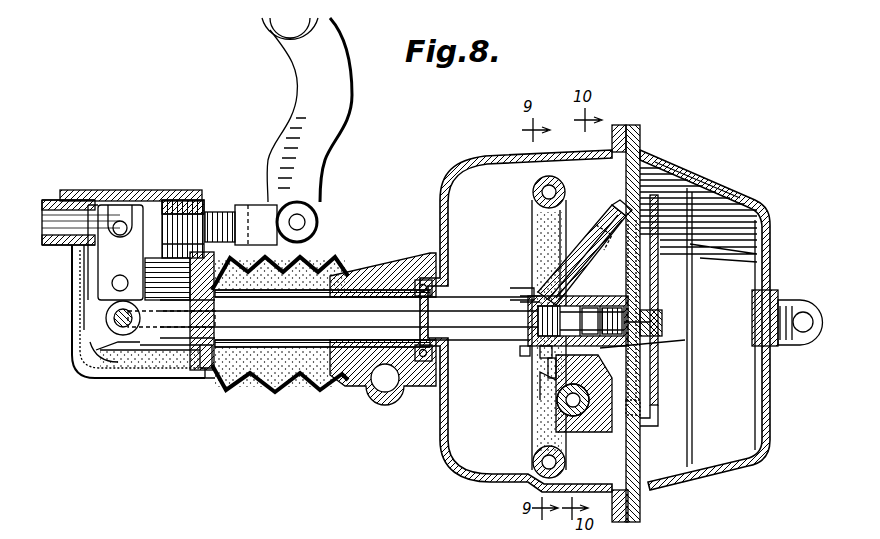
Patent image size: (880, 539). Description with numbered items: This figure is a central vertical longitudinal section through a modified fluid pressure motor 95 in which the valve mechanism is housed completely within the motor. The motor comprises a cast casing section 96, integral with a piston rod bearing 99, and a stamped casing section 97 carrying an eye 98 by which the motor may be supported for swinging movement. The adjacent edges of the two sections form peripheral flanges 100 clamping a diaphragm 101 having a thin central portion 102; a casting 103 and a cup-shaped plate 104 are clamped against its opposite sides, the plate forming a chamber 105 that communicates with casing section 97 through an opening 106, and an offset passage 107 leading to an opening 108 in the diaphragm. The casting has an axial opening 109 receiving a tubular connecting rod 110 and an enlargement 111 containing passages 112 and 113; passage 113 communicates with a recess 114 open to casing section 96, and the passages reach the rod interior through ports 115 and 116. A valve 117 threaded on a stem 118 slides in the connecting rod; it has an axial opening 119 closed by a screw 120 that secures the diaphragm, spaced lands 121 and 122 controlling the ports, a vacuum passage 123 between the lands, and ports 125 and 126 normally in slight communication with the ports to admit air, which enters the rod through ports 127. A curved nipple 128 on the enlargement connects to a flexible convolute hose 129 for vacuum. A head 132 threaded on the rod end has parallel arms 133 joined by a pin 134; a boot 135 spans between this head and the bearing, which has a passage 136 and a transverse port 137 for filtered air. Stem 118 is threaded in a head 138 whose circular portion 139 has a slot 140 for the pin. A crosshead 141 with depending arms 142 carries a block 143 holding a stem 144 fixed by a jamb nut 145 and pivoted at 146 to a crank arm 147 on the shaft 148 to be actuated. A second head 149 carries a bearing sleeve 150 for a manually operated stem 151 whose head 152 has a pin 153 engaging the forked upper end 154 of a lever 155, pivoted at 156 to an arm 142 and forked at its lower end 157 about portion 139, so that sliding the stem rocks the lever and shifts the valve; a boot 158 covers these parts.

The fluid pressure motor 95 is at (700, 168).
The casing section 96 is at (488, 165).
The casing section 97 is at (732, 190).
The eye 98 is at (795, 304).
The piston rod bearing 99 is at (372, 274).
The peripheral flanges 100 is at (622, 124).
The diaphragm 101 is at (688, 384).
The central portion 102 is at (654, 372).
The casting 103 is at (616, 418).
The plate 104 is at (648, 400).
The chamber 105 is at (645, 262).
The opening 106 is at (652, 322).
The passage 107 is at (665, 238).
The opening 108 is at (616, 222).
The axial opening 109 is at (572, 286).
The tubular connecting rod 110 is at (456, 302).
The enlargement 111 is at (548, 370).
The passage 112 is at (606, 238).
The passage 113 is at (600, 258).
The recess 114 is at (600, 358).
The port 115 is at (520, 288).
The port 116 is at (562, 272).
The valve 117 is at (520, 348).
The valve actuating stem 118 is at (458, 334).
The axial opening 119 is at (540, 354).
The screw 120 is at (686, 340).
The land 121 is at (578, 321).
The land 122 is at (591, 321).
The vacuum passage 123 is at (548, 378).
The port 125 is at (526, 296).
The port 126 is at (614, 321).
The ports 127 is at (238, 292).
The curved nipple 128 is at (574, 418).
The flexible convolute hose 129 is at (532, 250).
The head 132 is at (210, 368).
The arms 133 is at (160, 372).
The pin 134 is at (110, 368).
The boot 135 is at (274, 392).
The passage 136 is at (346, 392).
The transverse port 137 is at (382, 394).
The head 138 is at (188, 370).
The circular portion 139 is at (124, 330).
The slot 140 is at (98, 352).
The crosshead 141 is at (178, 200).
The depending arms 142 is at (146, 276).
The block 143 is at (186, 200).
The stem 144 is at (212, 212).
The jamb nut 145 is at (240, 210).
The pivotal connection 146 is at (300, 222).
The crank arm 147 is at (330, 135).
The shaft 148 is at (272, 48).
The second head 149 is at (84, 190).
The bearing sleeve 150 is at (60, 196).
The stem 151 is at (62, 250).
The head 152 is at (140, 205).
The pin 153 is at (120, 220).
The forked upper end 154 is at (108, 222).
The lever 155 is at (108, 280).
The pivotal connection 156 is at (104, 306).
The forked lower end 157 is at (96, 340).
The boot 158 is at (176, 378).